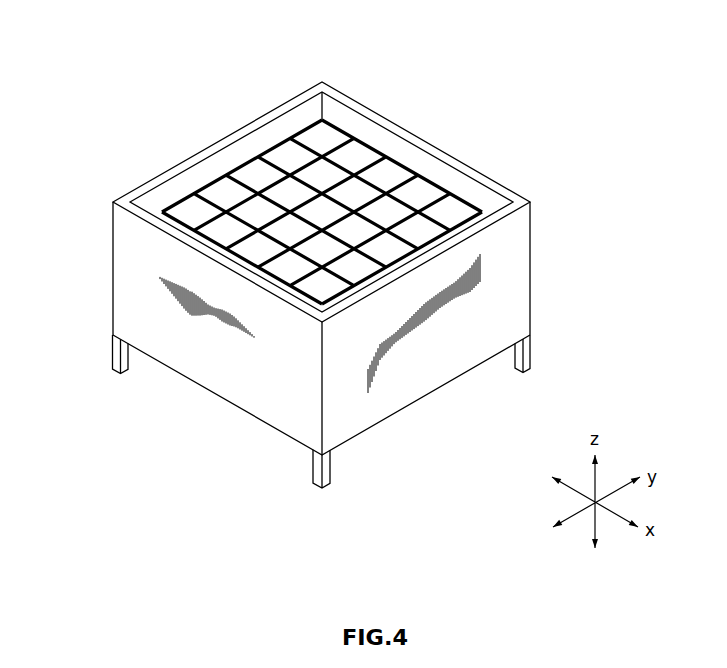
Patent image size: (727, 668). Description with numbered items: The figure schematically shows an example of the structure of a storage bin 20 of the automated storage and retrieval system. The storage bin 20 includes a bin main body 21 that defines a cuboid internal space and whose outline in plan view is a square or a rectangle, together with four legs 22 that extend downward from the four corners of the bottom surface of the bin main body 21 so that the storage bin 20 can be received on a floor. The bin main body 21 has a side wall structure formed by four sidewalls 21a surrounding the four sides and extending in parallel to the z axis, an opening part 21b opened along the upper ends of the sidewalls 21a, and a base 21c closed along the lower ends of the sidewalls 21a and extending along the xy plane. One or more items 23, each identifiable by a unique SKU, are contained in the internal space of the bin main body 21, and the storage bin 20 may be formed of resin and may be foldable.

The storage bin 20 is at (335, 274).
The bin main body 21 is at (359, 259).
The sidewall 21a is at (197, 153).
The opening part 21b is at (238, 150).
The base 21c is at (410, 368).
The leg 22 is at (112, 347).
The item 23 is at (283, 152).